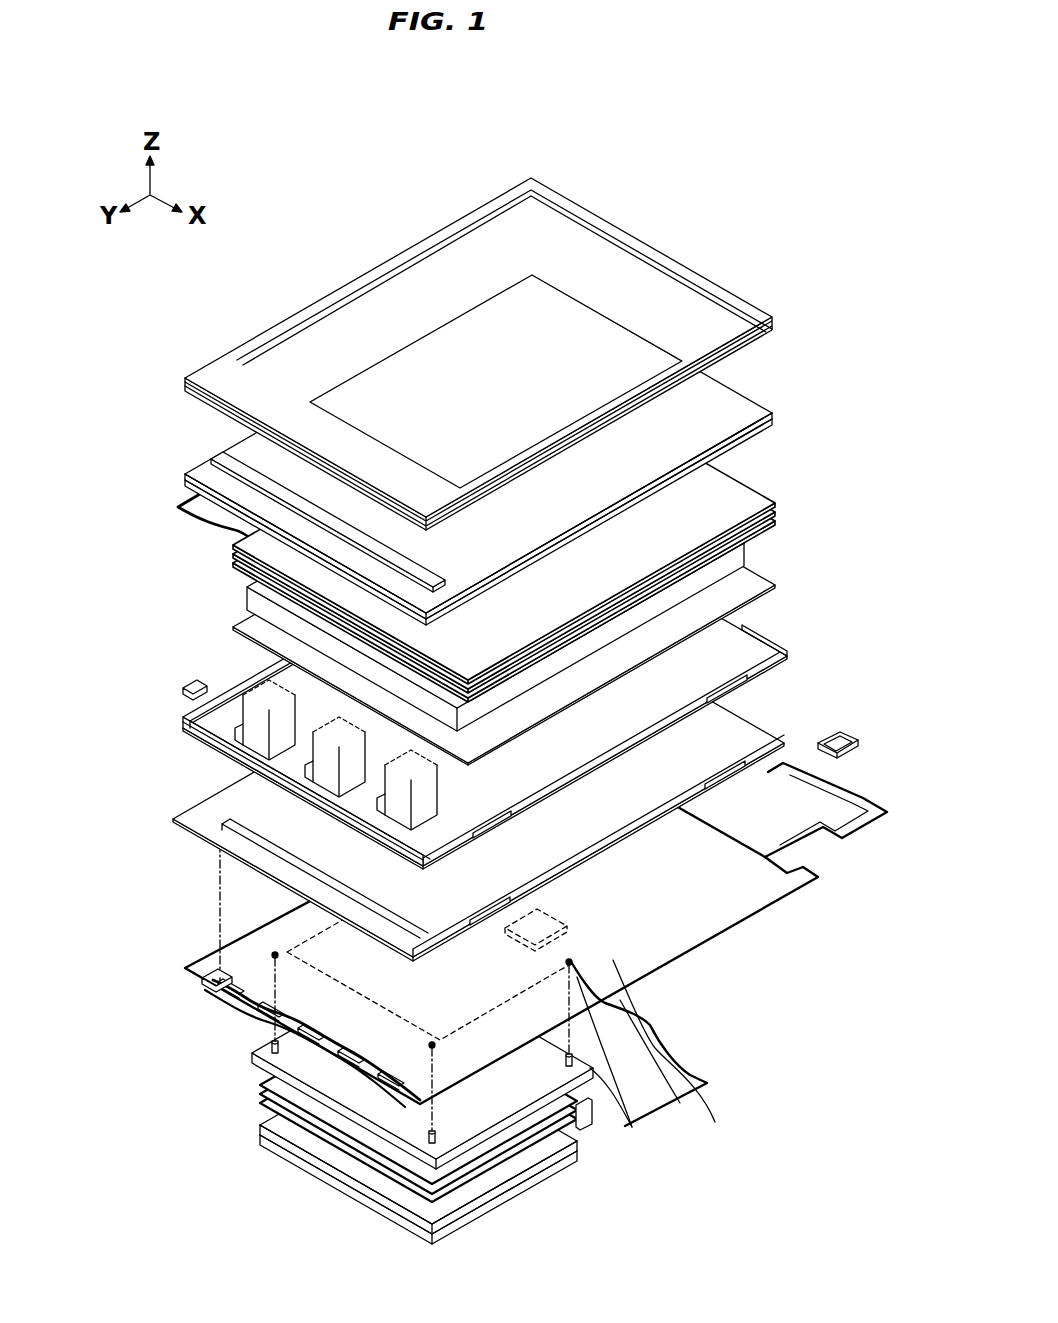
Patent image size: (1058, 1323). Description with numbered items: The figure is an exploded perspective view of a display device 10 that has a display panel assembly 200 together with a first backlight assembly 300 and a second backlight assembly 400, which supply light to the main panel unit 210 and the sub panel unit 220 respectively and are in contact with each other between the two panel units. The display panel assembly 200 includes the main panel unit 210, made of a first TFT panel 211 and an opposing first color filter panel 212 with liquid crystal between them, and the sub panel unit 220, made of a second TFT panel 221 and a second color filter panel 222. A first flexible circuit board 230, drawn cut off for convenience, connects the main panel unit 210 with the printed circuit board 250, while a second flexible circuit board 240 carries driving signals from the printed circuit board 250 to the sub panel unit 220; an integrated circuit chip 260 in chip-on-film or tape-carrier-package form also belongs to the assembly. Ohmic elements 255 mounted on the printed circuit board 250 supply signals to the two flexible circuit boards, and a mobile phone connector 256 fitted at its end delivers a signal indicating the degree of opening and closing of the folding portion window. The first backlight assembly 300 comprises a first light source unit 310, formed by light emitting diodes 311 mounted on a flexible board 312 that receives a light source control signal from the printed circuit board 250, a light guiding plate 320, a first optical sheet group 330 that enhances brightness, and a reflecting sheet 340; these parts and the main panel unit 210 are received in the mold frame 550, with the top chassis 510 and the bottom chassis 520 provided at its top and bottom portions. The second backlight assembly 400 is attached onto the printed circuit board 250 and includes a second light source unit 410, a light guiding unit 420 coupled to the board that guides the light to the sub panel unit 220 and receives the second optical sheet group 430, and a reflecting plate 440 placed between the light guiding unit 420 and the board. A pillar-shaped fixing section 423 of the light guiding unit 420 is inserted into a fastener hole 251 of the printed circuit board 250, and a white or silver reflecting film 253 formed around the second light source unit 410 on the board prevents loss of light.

The display device 10 is at (360, 240).
The display panel assembly 200 is at (856, 1005).
The main panel unit 210 is at (830, 397).
The first TFT panel 211 is at (773, 423).
The first color filter panel 212 is at (773, 414).
The sub panel unit 220 is at (190, 1124).
The second TFT panel 221 is at (260, 1130).
The second color filter panel 222 is at (260, 1146).
The first flexible circuit board 230 is at (270, 1013).
The second flexible circuit board 240 is at (690, 1073).
The printed circuit board 250 is at (770, 905).
The fastener hole 251 is at (272, 950).
The reflecting film 253 is at (563, 947).
The ohmic elements 255 is at (295, 995).
The mobile phone connector 256 is at (842, 734).
The integrated circuit chip 260 is at (230, 462).
The first backlight assembly 300 is at (100, 553).
The first light source unit 310 is at (140, 641).
The light emitting diodes 311 is at (228, 672).
The flexible board 312 is at (190, 686).
The light guiding plate 320 is at (247, 592).
The first optical sheet group 330 is at (228, 548).
The reflecting sheet 340 is at (240, 632).
The second backlight assembly 400 is at (752, 1130).
The second light source unit 410 is at (607, 990).
The light guiding unit 420 is at (540, 1033).
The fixing section 423 is at (270, 1052).
The second optical sheet group 430 is at (582, 1118).
The reflecting plate 440 is at (593, 1003).
The top chassis 510 is at (688, 270).
The bottom chassis 520 is at (773, 737).
The mold frame 550 is at (185, 722).